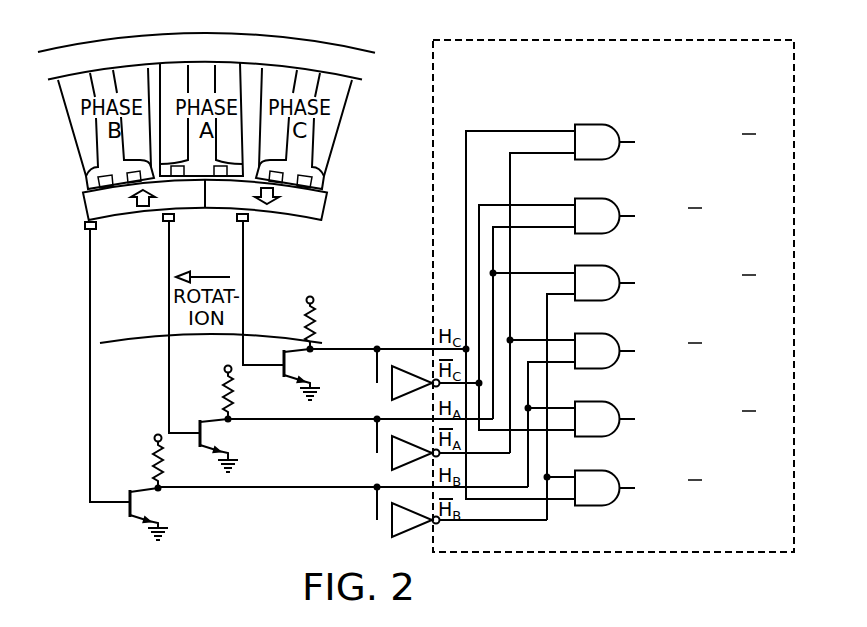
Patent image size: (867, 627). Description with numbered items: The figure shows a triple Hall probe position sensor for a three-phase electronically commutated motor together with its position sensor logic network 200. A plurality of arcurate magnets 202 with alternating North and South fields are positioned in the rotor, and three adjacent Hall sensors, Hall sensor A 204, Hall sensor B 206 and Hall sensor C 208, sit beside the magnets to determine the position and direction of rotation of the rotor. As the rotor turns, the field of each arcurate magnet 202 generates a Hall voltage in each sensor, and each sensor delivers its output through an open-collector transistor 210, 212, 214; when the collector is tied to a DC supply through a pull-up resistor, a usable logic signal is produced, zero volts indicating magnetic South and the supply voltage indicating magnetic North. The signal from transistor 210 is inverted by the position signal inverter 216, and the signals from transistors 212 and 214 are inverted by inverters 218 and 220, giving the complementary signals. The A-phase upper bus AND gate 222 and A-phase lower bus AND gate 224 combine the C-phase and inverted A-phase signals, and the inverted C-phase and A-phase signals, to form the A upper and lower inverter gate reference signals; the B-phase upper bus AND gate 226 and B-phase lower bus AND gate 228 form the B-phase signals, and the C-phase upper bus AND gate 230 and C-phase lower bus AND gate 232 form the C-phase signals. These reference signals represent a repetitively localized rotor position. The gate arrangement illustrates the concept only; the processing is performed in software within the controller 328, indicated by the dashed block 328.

The position sensor logic network 200 is at (510, 118).
The arcurate magnets 202 is at (82, 205).
The Hall sensor A 204 is at (202, 323).
The Hall sensor B 206 is at (125, 362).
The Hall sensor C 208 is at (277, 289).
The open-collector transistor 210 is at (227, 437).
The open-collector transistor 212 is at (152, 506).
The open-collector transistor 214 is at (303, 368).
The position signal inverter 216 is at (390, 471).
The inverter 218 is at (390, 537).
The inverter 220 is at (390, 399).
The A-phase upper bus AND gate 222 is at (603, 154).
The A-phase lower bus AND gate 224 is at (603, 228).
The B-phase upper bus AND gate 226 is at (603, 295).
The B-phase lower bus AND gate 228 is at (603, 363).
The C-phase upper bus AND gate 230 is at (603, 431).
The C-phase lower bus AND gate 232 is at (603, 500).
The microprocessor 328 is at (545, 37).